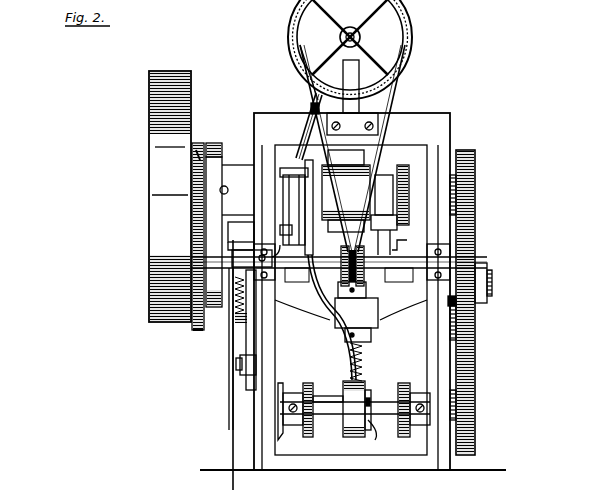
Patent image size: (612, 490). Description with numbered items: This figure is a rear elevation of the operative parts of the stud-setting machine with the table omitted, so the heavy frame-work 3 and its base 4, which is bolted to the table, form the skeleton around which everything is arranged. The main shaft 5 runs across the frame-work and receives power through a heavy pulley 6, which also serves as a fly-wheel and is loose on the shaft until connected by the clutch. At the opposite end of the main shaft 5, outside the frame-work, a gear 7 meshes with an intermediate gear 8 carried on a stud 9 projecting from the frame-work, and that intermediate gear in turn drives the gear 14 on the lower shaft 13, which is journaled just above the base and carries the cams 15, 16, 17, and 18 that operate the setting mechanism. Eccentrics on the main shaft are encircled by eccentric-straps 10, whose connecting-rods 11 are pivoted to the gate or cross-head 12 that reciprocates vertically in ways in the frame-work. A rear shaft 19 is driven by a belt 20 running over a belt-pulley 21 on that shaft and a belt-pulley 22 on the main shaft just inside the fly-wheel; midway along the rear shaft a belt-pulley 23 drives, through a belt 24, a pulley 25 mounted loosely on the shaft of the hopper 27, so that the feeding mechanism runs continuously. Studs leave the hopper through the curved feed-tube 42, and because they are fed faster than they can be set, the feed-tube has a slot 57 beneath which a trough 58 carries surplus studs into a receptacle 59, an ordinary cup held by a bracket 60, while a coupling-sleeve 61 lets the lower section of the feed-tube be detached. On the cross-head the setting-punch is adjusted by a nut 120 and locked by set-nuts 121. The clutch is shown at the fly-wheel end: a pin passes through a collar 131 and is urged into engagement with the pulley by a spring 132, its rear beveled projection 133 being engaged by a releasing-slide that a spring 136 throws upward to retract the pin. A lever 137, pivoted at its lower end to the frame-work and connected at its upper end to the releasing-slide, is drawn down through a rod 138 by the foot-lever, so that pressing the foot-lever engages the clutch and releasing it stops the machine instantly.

The frame-work 3 is at (352, 291).
The base of the frame-work 4 is at (362, 448).
The main shaft 5 is at (346, 191).
The pulley 6 is at (170, 196).
The gear 7 is at (476, 164).
The intermediate gear 8 is at (477, 324).
The stud 9 is at (452, 302).
The eccentric-straps 10 is at (390, 197).
The connecting-rods 11 is at (400, 242).
The gate or cross-head 12 is at (351, 304).
The shaft 13 is at (326, 398).
The gear 14 is at (476, 414).
The cam 15 is at (404, 385).
The cam 16 is at (306, 438).
The cam 17 is at (357, 409).
The cam 18 is at (366, 430).
The shaft 19 is at (339, 280).
The belt 20 is at (204, 305).
The belt-pulley 21 is at (195, 328).
The belt-pulley 22 is at (198, 150).
The belt-pulley 23 is at (346, 283).
The belt 24 is at (400, 95).
The pulley 25 is at (410, 36).
The hopper 27 is at (350, 49).
The cable 42 is at (336, 332).
The slot 57 is at (309, 106).
The trough 58 is at (307, 136).
The receptacle 59 is at (296, 207).
The bracket 60 is at (292, 239).
The coupling-sleeve 61 is at (312, 96).
The nut 120 is at (356, 305).
The set-nuts 121 is at (372, 334).
The collar 131 is at (222, 150).
The spring 132 is at (225, 208).
The beveled projection 133 is at (249, 240).
The spring 136 is at (236, 312).
The lever 137 is at (237, 357).
The rod 138 is at (233, 440).